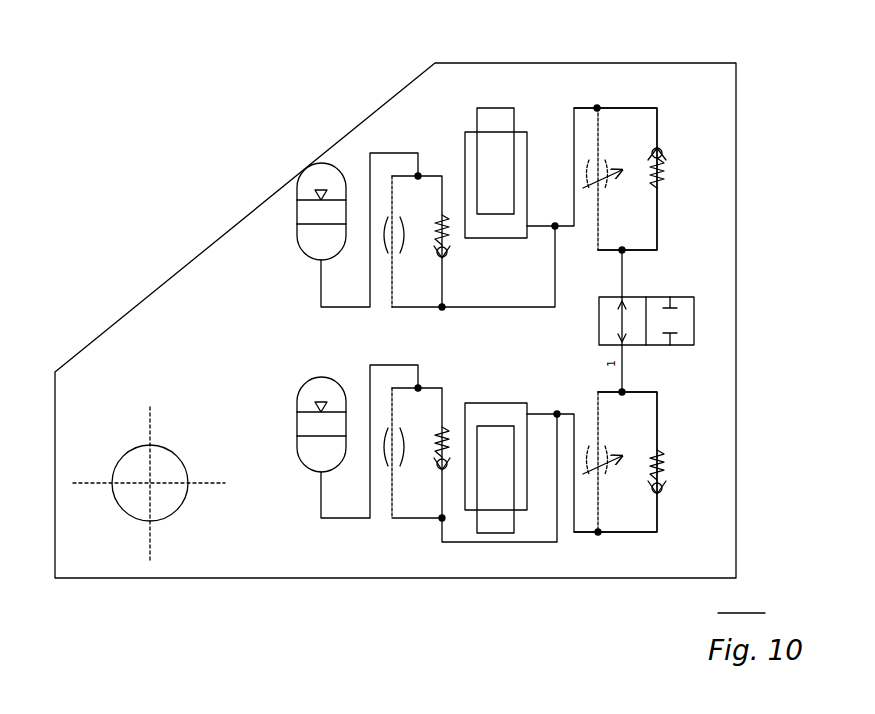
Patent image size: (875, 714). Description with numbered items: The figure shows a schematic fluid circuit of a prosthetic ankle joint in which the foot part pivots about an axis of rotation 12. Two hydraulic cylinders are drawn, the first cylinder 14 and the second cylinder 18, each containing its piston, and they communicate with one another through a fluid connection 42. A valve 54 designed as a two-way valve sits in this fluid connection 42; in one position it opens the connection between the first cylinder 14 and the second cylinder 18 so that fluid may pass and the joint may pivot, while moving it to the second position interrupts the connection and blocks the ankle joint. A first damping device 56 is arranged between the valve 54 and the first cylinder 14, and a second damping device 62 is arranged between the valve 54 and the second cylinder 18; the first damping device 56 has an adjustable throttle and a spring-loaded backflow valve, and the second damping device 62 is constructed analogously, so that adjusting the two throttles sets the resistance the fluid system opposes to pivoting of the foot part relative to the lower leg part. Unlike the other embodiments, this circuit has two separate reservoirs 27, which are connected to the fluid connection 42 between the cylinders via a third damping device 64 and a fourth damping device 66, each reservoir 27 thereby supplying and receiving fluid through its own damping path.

The third damping device 64 is at (403, 116).
The axis of rotation 12 is at (150, 483).
The reservoir 27 is at (298, 245).
The second cylinder 18 is at (495, 226).
The first cylinder 14 is at (478, 422).
The second damping device 62 is at (680, 160).
The fluid connection 42 is at (622, 268).
The valve 54 is at (697, 320).
The first damping device 56 is at (680, 475).
The fourth damping device 66 is at (405, 530).